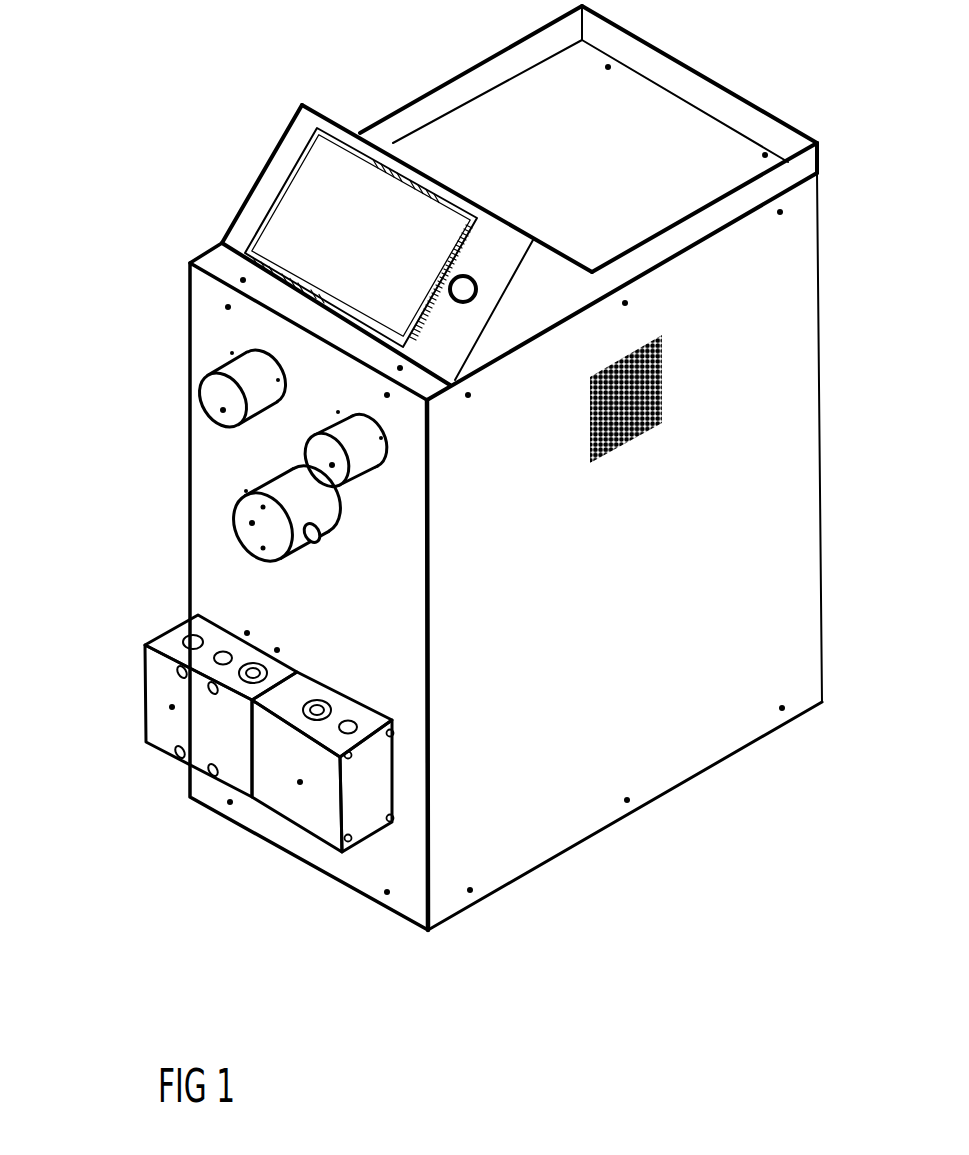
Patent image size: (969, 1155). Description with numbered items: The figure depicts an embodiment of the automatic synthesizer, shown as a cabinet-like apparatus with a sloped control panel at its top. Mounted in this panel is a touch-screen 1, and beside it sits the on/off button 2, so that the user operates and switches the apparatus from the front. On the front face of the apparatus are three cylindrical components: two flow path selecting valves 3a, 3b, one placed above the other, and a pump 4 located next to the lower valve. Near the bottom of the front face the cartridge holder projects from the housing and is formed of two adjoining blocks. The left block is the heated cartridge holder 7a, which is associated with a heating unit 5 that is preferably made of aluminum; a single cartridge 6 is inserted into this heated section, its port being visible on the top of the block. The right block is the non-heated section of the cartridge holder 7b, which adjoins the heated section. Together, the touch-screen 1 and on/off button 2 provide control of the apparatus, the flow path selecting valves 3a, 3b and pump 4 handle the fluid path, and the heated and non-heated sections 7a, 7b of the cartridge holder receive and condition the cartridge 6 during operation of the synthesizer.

The touch-screen 1 is at (328, 190).
The on/off button 2 is at (449, 285).
The flow path selecting valve 3a is at (223, 410).
The flow path selecting valve 3b is at (332, 465).
The pump 4 is at (252, 523).
The heating unit 5 is at (172, 707).
The cartridge 6 is at (247, 684).
The heated cartridge holder section 7a is at (146, 712).
The non-heated section of the cartridge holder 7b is at (300, 782).